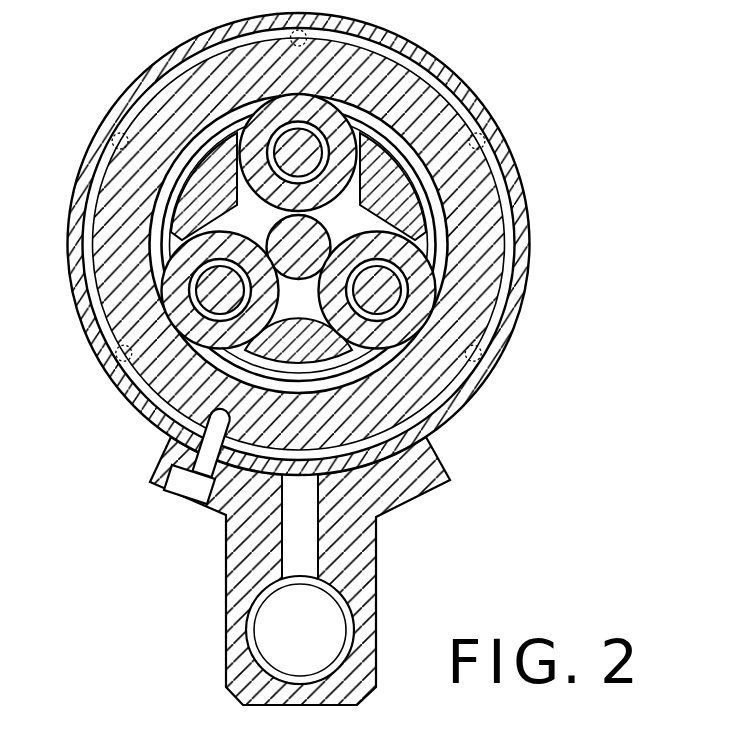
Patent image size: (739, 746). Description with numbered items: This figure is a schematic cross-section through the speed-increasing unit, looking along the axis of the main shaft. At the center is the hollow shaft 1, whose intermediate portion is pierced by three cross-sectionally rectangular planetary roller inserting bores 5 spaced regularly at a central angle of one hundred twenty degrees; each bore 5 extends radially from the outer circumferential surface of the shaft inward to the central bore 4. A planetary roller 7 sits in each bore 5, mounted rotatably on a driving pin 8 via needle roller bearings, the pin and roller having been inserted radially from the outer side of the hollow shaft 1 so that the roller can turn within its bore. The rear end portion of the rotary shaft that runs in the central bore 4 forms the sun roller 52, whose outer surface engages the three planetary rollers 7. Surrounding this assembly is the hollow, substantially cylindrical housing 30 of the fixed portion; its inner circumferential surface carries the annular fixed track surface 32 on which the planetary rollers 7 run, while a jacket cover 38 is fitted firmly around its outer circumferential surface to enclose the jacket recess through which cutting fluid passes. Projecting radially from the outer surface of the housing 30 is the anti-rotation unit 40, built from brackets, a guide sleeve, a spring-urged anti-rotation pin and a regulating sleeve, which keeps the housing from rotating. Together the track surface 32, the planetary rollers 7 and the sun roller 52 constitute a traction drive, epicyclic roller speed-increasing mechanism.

The hollow shaft 1 is at (402, 175).
The central bore 4 is at (262, 212).
The planetary roller inserting bore 5 is at (430, 217).
The planetary roller 7 is at (180, 270).
The driving pin 8 is at (217, 300).
The housing 30 is at (187, 107).
The annular fixed track surface 32 is at (405, 176).
The jacket cover 38 is at (437, 63).
The anti-rotation unit 40 is at (388, 585).
The sun roller 52 is at (295, 245).